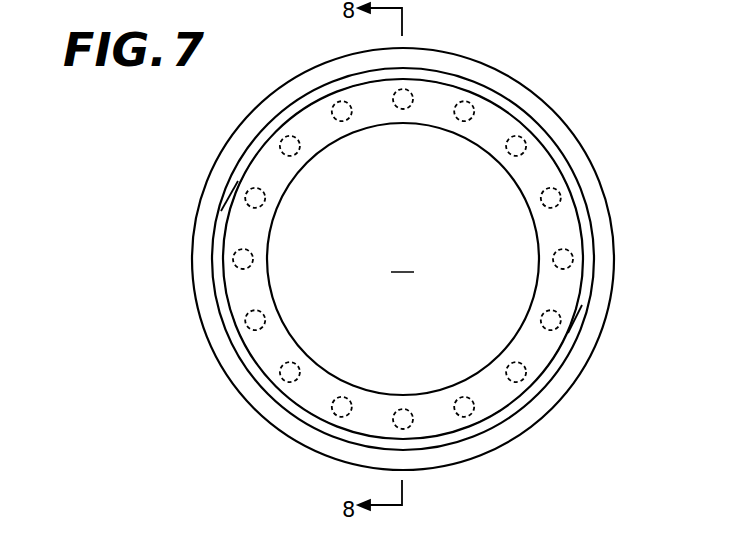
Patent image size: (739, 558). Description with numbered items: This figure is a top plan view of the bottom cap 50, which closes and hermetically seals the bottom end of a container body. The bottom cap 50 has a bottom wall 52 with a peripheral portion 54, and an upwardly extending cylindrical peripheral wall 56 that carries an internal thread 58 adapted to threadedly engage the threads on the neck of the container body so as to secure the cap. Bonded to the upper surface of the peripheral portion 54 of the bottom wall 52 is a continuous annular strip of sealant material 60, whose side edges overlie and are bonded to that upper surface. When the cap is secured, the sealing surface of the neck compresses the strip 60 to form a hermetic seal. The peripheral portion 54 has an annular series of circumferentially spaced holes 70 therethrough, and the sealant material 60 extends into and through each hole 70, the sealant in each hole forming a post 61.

The bottom cap 50 is at (191, 203).
The bottom wall 52 is at (403, 259).
The peripheral portion 54 is at (560, 281).
The cylindrical peripheral wall 56 is at (206, 332).
The internal thread 58 is at (264, 375).
The strip of sealant material 60 is at (528, 168).
The post 61 is at (518, 372).
The holes 70 is at (466, 101).